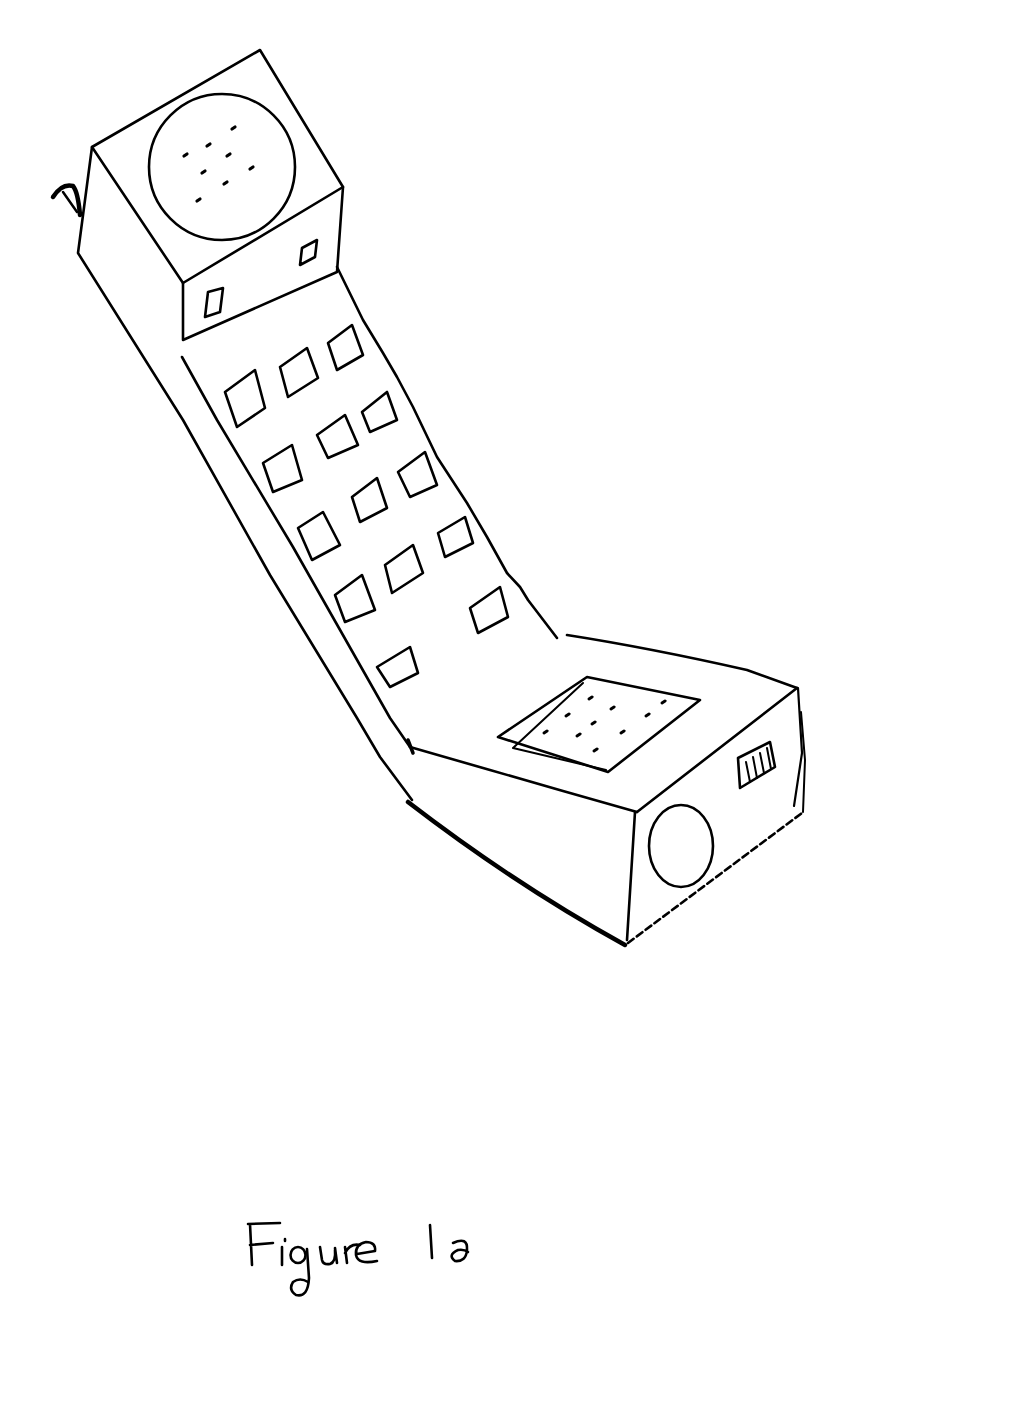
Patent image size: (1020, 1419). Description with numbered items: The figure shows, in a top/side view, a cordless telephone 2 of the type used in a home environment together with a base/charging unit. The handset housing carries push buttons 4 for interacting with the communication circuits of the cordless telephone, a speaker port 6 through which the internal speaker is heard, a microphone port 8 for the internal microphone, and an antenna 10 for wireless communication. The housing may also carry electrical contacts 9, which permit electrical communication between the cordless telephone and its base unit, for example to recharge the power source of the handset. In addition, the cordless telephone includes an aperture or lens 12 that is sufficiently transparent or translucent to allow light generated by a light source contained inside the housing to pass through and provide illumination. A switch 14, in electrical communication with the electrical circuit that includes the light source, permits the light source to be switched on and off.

The cordless telephone 2 is at (395, 357).
The push buttons 4 is at (307, 543).
The speaker port 6 is at (270, 133).
The microphone port 8 is at (622, 707).
The electrical contacts 9 is at (305, 248).
The antenna 10 is at (75, 188).
The aperture or lens 12 is at (693, 867).
The switch 14 is at (779, 747).